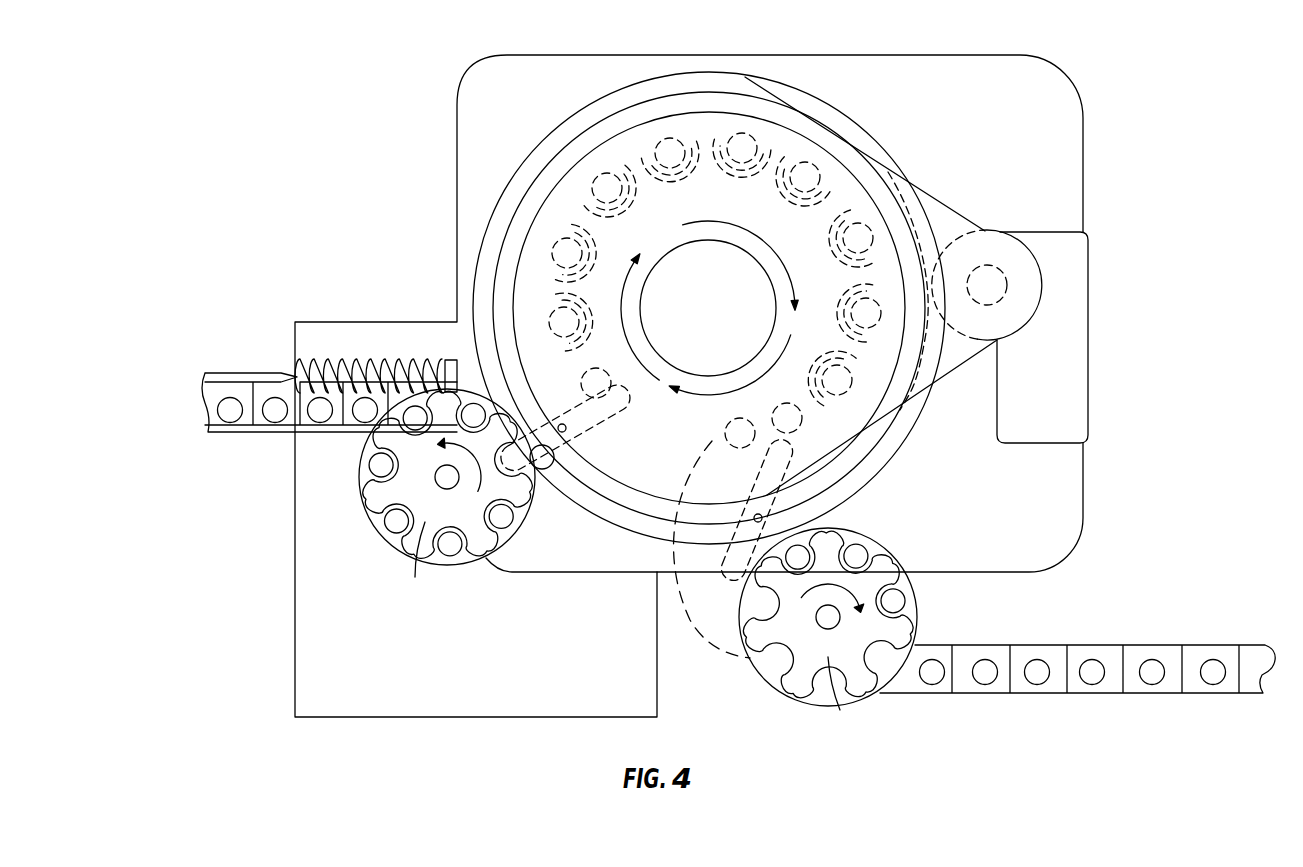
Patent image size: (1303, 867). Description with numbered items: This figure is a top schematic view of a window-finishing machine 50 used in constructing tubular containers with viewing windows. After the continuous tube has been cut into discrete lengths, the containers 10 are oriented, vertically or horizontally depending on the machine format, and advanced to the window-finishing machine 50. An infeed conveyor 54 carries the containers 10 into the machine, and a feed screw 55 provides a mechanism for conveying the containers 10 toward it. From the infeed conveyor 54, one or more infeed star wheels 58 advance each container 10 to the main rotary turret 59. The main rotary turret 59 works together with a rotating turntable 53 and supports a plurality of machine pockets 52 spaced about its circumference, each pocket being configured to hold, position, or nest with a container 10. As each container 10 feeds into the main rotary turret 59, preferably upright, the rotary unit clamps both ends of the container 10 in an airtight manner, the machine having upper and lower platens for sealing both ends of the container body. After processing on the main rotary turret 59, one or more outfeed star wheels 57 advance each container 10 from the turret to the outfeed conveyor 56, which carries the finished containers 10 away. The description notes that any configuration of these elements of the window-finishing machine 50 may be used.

The window-finishing machine 50 is at (738, 386).
The main rotary turret 59 is at (534, 125).
The container 10 is at (668, 152).
The rotating turntable 53 is at (807, 158).
The machine pocket 52 is at (840, 306).
The infeed conveyor 54 is at (215, 384).
The feed screw 55 is at (335, 360).
The infeed star wheel 58 is at (430, 556).
The outfeed star wheel 57 is at (822, 688).
The outfeed conveyor 56 is at (1173, 683).